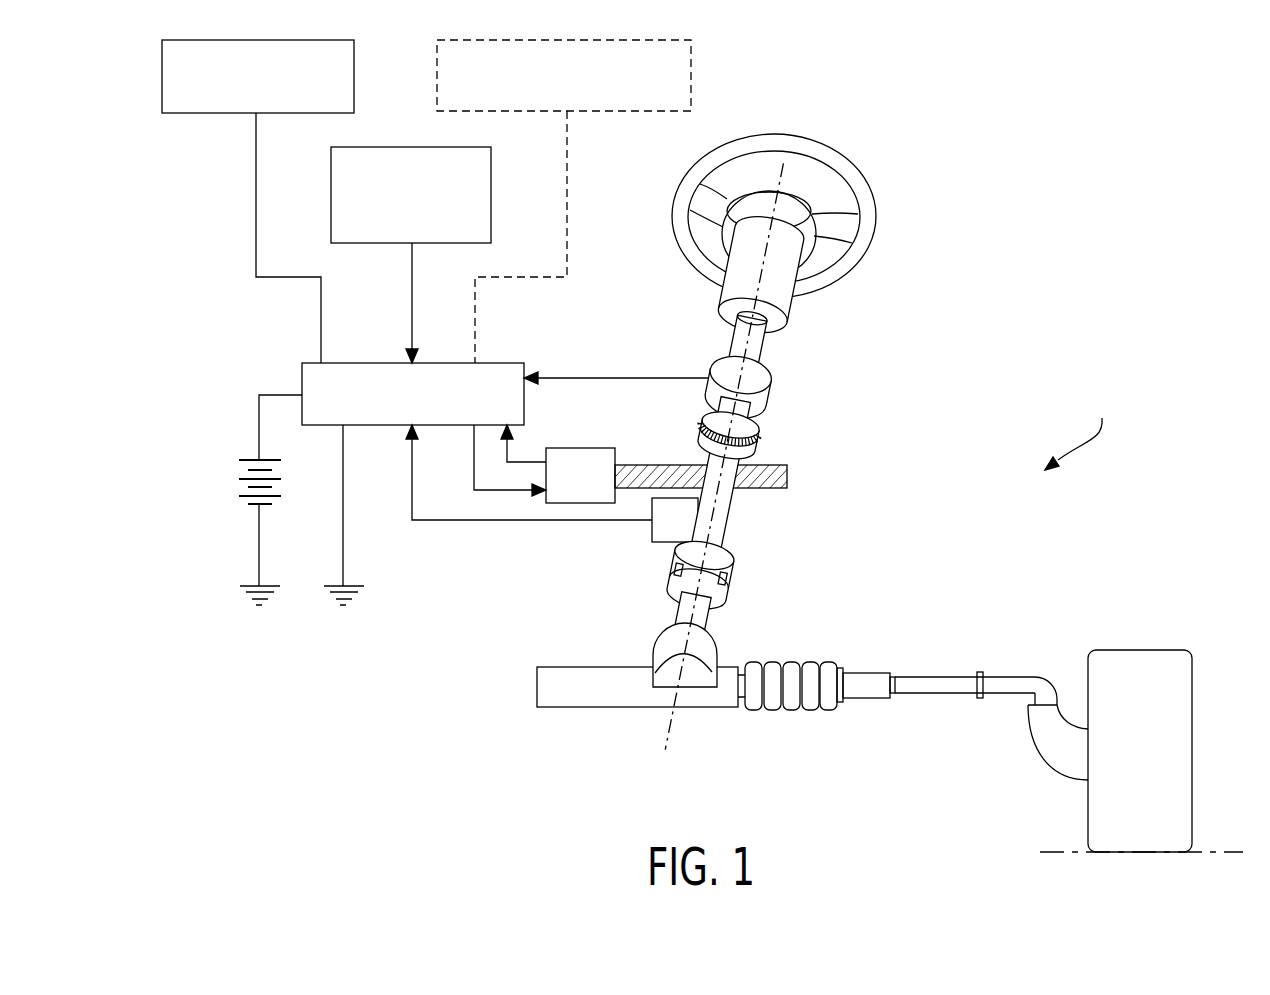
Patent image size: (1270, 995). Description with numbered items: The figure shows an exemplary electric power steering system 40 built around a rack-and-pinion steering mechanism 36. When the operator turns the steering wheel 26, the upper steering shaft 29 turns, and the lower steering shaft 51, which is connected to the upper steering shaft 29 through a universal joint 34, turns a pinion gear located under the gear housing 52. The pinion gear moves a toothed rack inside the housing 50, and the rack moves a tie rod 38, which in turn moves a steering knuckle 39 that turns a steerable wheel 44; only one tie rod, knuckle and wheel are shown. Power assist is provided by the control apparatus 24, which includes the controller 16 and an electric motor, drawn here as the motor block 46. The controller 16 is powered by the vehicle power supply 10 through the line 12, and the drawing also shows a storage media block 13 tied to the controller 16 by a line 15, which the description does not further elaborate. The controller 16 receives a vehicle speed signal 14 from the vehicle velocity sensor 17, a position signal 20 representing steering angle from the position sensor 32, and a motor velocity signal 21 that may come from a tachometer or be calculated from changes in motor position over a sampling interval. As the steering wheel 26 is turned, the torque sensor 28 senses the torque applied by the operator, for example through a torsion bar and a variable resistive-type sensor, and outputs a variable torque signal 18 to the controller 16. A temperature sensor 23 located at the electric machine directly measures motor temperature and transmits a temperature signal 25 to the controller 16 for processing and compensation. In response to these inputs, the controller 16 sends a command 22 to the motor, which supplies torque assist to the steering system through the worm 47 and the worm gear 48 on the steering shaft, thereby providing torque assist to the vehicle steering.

The vehicle power supply 10 is at (240, 485).
The line 12 is at (278, 393).
The storage media 13 is at (192, 114).
The vehicle speed signal 14 is at (412, 262).
The storage media connection line 15 is at (256, 181).
The controller 16 is at (383, 363).
The vehicle velocity sensor 17 is at (412, 147).
The torque signal 18 is at (625, 378).
The position signal 20 is at (532, 521).
The motor velocity signal 21 is at (533, 462).
The command 22 is at (487, 491).
The temperature sensor 23 is at (696, 93).
The control apparatus 24 is at (974, 360).
The temperature signal 25 is at (572, 178).
The steering wheel 26 is at (831, 166).
The torque sensor 28 is at (763, 382).
The upper steering shaft 29 is at (737, 338).
The position sensor 32 is at (650, 530).
The universal joint 34 is at (730, 574).
The steering mechanism 36 is at (828, 649).
The tie rods 38 is at (931, 694).
The steering knuckles 39 is at (1055, 740).
The electric power steering system 40 is at (1079, 427).
The steerable wheel 44 is at (1127, 665).
The electric motor 46 is at (592, 448).
The worm 47 is at (781, 477).
The worm gear 48 is at (742, 438).
The housing 50 is at (577, 697).
The lower steering shaft 51 is at (700, 626).
The gear housing 52 is at (660, 647).